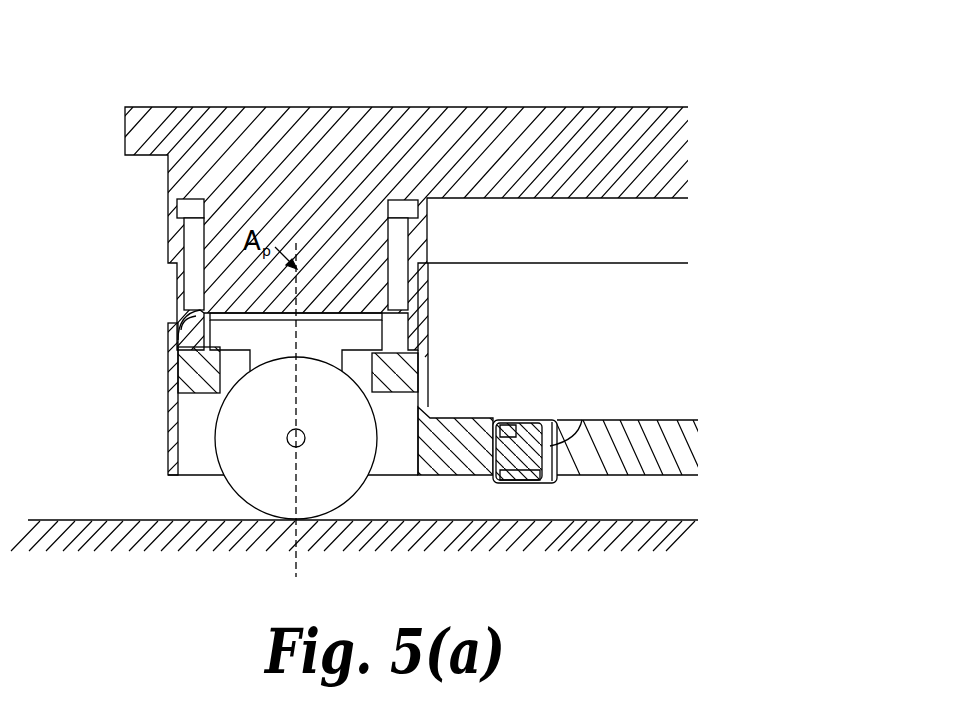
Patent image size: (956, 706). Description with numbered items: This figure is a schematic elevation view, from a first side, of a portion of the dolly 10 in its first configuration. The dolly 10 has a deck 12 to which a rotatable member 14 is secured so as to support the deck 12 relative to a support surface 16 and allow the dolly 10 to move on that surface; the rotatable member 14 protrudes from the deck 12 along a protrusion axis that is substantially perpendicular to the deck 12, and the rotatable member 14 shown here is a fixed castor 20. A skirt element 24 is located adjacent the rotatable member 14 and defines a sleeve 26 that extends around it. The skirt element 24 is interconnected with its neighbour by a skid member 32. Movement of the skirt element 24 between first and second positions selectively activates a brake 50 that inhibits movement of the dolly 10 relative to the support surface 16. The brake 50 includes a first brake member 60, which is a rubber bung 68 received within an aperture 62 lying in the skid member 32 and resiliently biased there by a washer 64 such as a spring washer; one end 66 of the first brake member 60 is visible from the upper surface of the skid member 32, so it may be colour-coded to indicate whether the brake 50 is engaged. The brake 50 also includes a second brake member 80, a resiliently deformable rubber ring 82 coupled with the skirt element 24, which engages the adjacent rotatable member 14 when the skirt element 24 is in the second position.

The dolly 10 is at (135, 68).
The deck 12 is at (548, 130).
The rotatable member 14 is at (330, 460).
The support surface 16 is at (90, 532).
The fixed castor 20 is at (255, 467).
The skirt element 24 is at (168, 427).
The sleeve 26 is at (172, 395).
The skid member 32 is at (660, 440).
The brake 50 is at (400, 358).
The first brake member 60 is at (527, 452).
The aperture 62 is at (582, 420).
The washer 64 is at (500, 450).
The end 66 is at (518, 430).
The rubber bung 68 is at (533, 472).
The second brake member 80 is at (190, 332).
The rubber ring 82 is at (203, 373).